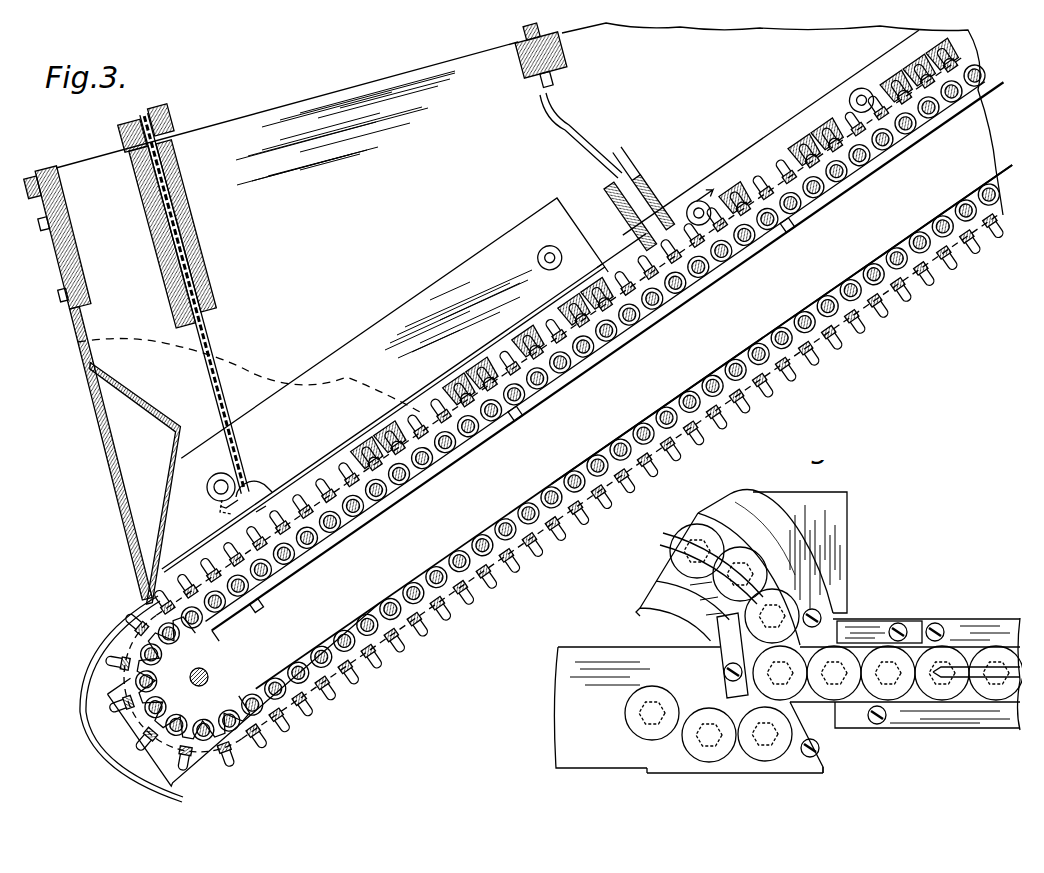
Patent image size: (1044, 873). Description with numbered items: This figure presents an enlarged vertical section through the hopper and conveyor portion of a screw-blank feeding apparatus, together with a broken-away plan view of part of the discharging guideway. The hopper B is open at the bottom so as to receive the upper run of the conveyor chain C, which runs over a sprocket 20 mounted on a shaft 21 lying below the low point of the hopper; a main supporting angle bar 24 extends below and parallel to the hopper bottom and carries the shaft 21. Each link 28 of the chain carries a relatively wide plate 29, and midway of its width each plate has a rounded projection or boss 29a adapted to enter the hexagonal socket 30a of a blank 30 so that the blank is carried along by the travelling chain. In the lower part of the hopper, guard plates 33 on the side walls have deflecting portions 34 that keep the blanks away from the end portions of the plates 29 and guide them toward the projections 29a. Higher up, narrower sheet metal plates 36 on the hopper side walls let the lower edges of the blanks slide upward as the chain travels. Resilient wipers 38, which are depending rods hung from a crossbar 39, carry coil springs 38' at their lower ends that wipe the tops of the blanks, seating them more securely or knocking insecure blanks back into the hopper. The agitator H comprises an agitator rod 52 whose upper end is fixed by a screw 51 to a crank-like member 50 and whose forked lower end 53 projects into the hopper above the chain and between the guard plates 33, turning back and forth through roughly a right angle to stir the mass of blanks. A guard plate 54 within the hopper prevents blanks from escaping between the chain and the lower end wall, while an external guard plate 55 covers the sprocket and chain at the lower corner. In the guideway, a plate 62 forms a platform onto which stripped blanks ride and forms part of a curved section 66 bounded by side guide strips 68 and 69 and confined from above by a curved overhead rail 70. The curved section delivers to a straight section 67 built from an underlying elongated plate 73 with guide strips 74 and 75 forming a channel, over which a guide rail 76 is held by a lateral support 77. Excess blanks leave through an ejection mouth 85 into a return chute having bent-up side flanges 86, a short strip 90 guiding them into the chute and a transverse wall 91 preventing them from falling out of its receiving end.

In FIG. 3, the sprocket 20 is at (232, 656).
In FIG. 3, the shaft 21 is at (208, 675).
In FIG. 3, the main supporting angle bar 24 is at (428, 544).
In FIG. 3, the link 28 is at (399, 592).
In FIG. 3, the plate 29 is at (412, 626).
In FIG. 3, the rounded projection or boss 29a is at (446, 625).
In FIG. 3, the blank 30 is at (464, 382).
In FIG. 6A, the blank 30 is at (740, 622).
In FIG. 3, the hexagonal socket 30a is at (484, 374).
In FIG. 3, the guard plates 33 is at (345, 350).
In FIG. 3, the deflecting portions 34 is at (421, 402).
In FIG. 3, the sheet metal plates 36 is at (843, 102).
In FIG. 3, the resilient wipers 38 is at (581, 135).
In FIG. 3, the coil springs 38' is at (641, 199).
In FIG. 3, the crossbar 39 is at (524, 72).
In FIG. 3, the crank-like member 50 is at (112, 138).
In FIG. 3, the screw 51 is at (178, 111).
In FIG. 3, the agitator rod 52 is at (215, 298).
In FIG. 3, the forked lower end 53 is at (250, 483).
In FIG. 3, the guard plate 54 is at (153, 474).
In FIG. 3, the external guard plate 55 is at (98, 641).
In FIG. 3, the hopper B is at (332, 98).
In FIG. 3, the conveyor chain C is at (580, 463).
In FIG. 3, the agitator H is at (230, 412).
In FIG. 6A, the plate 62 is at (852, 531).
In FIG. 6A, the curved section 66 is at (748, 490).
In FIG. 6A, the straight section 67 is at (1001, 622).
In FIG. 6A, the side guide strip 68 is at (657, 574).
In FIG. 6A, the side guide strip 69 is at (728, 500).
In FIG. 6A, the overhead rail 70 is at (690, 545).
In FIG. 6A, the elongated plate 73 is at (985, 705).
In FIG. 6A, the guide strip 74 is at (961, 731).
In FIG. 6A, the guide strip 75 is at (962, 624).
In FIG. 6A, the guide rail 76 is at (1003, 680).
In FIG. 6A, the lateral support 77 is at (887, 621).
In FIG. 6A, the ejection mouth 85 is at (806, 713).
In FIG. 6A, the bent-up side flanges 86 is at (556, 745).
In FIG. 6A, the short strip 90 is at (824, 752).
In FIG. 6A, the wall 91 is at (735, 776).